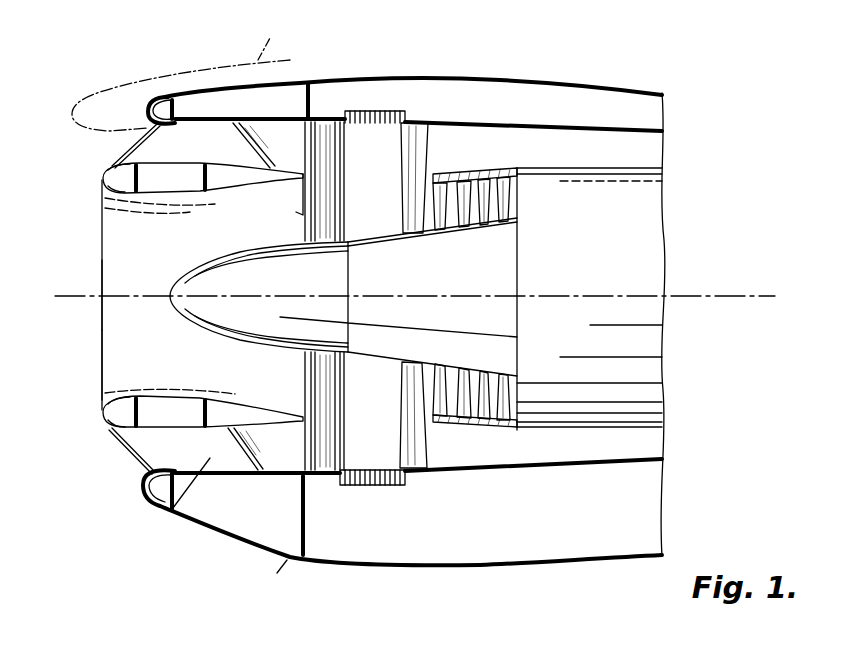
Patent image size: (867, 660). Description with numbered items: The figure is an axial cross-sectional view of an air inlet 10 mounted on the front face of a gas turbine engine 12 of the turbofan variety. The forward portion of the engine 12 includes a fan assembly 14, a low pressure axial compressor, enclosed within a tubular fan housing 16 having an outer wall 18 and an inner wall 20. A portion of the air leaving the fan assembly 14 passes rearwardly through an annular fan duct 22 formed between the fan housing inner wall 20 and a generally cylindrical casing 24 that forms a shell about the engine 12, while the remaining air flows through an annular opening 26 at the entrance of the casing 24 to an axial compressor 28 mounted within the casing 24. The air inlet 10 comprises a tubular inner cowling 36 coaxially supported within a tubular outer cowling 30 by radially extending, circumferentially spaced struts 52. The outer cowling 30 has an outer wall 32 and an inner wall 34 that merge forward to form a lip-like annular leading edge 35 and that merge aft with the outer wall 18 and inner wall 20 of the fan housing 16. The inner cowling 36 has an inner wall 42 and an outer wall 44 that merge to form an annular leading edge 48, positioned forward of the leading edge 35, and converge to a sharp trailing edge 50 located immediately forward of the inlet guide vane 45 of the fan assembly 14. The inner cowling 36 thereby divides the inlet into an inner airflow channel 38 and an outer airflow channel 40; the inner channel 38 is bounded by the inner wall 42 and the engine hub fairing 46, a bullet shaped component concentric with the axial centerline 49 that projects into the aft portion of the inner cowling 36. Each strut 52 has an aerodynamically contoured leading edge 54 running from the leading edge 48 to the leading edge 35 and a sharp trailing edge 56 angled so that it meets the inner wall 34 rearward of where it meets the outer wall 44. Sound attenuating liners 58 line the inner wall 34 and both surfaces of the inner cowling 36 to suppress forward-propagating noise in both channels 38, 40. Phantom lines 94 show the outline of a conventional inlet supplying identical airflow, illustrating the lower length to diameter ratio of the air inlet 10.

The air inlet 10 is at (104, 392).
The gas turbine engine 12 is at (631, 233).
The fan assembly 14 is at (390, 140).
The fan housing 16 is at (562, 100).
The outer wall 18 is at (385, 75).
The inner wall 20 is at (480, 130).
The annular fan duct 22 is at (632, 150).
The casing 24 is at (645, 414).
The annular opening 26 is at (428, 402).
The axial compressor 28 is at (517, 233).
The outer cowling 30 is at (212, 103).
The outer wall 32 is at (272, 302).
The inner wall 34 is at (279, 127).
The annular leading edge 35 is at (153, 116).
The inner cowling 36 is at (131, 340).
The inner airflow channel 38 is at (128, 238).
The outer airflow channel 40 is at (266, 96).
The inner wall 42 is at (106, 206).
The outer wall 44 is at (125, 156).
The inlet guide vane 45 is at (325, 140).
The engine hub fairing 46 is at (200, 277).
The annular leading edge 48 is at (105, 189).
The axial centerline 49 is at (716, 296).
The trailing edge 50 is at (292, 216).
The struts 52 is at (157, 143).
The leading edge 54 is at (115, 160).
The trailing edge 56 is at (243, 180).
The sound attenuating liners 58 is at (232, 117).
The phantom lines 94 is at (76, 96).